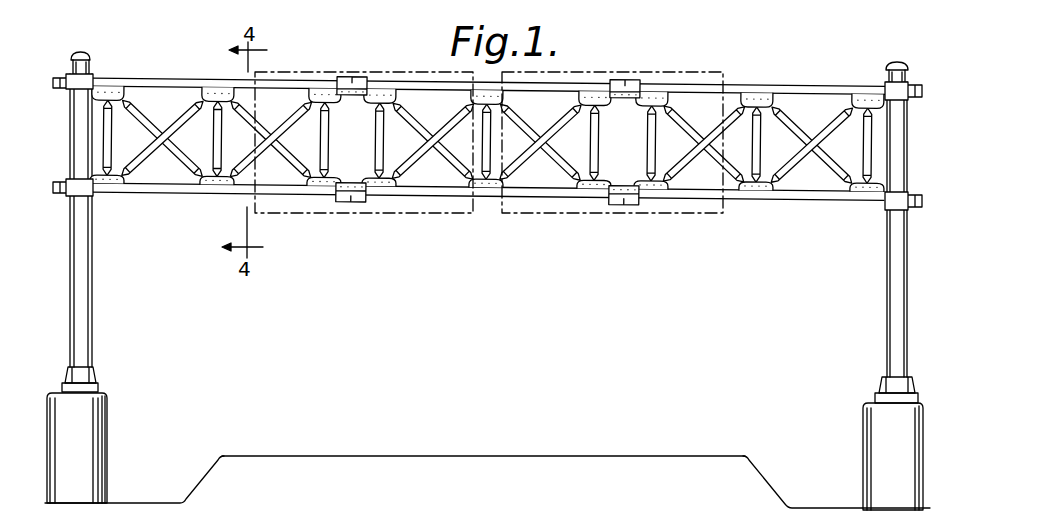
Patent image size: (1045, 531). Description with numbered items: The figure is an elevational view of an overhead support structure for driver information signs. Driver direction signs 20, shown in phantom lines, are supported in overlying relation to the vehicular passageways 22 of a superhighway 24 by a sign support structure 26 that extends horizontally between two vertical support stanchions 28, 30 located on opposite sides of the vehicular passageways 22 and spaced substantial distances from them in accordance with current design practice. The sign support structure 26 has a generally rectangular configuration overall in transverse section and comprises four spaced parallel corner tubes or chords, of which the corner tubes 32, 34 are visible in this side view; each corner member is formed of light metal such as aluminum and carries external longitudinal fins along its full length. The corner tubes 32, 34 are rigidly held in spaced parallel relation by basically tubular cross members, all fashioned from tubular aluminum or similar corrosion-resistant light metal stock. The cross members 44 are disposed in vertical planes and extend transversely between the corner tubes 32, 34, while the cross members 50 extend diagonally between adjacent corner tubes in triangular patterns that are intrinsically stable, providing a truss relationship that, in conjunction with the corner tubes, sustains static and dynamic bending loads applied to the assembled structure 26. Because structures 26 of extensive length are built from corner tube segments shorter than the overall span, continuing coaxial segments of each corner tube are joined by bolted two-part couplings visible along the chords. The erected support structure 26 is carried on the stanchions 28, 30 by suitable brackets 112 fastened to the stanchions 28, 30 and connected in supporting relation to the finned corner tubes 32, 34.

The driver direction sign 20 is at (457, 213).
The vehicular passageway 22 is at (356, 456).
The superhighway 24 is at (210, 460).
The sign support structure 26 is at (758, 85).
The vertical support stanchion 28 is at (93, 302).
The vertical support stanchion 30 is at (887, 327).
The corner tube 32 is at (193, 196).
The corner tube 34 is at (170, 78).
The cross member 44 is at (108, 140).
The diagonal cross member 50 is at (150, 130).
The bracket 112 is at (65, 74).